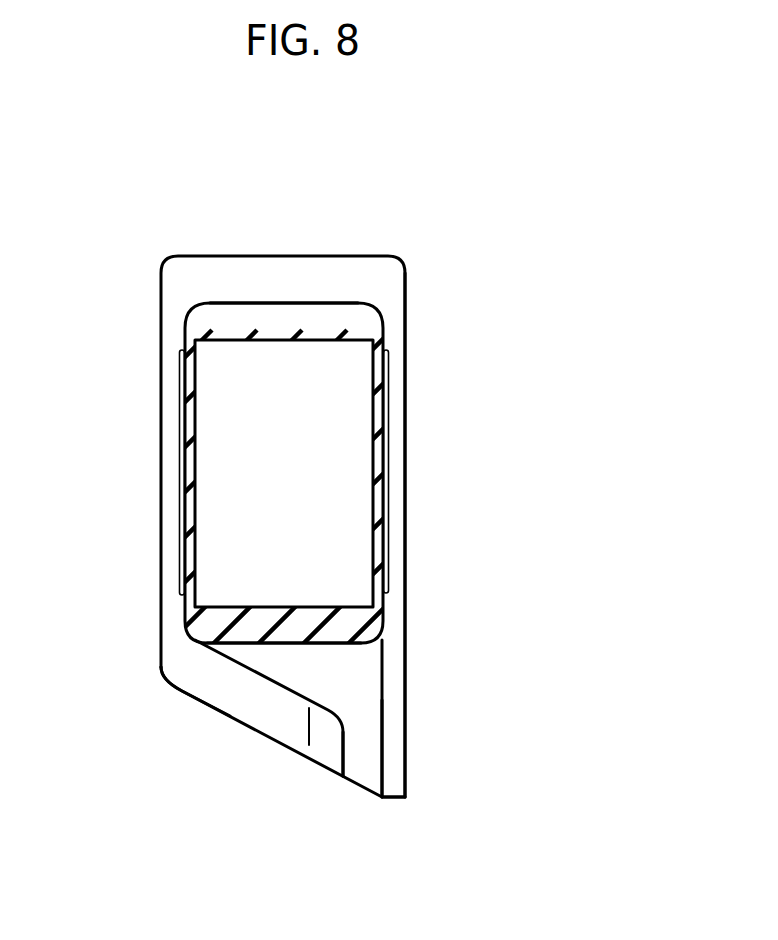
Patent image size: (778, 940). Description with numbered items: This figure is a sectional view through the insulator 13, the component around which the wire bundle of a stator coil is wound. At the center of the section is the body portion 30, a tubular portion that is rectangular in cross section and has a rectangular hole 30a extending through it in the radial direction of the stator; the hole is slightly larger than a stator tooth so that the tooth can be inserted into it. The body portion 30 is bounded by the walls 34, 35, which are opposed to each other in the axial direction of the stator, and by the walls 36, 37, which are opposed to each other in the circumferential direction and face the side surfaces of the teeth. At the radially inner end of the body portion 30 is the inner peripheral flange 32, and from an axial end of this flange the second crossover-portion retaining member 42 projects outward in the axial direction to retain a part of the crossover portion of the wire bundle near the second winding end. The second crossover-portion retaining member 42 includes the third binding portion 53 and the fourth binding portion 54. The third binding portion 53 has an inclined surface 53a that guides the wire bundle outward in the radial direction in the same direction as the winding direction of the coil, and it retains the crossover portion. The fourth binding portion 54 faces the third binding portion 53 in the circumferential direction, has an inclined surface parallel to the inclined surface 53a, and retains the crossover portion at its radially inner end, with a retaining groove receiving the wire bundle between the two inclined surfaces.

The insulator 13 is at (408, 218).
The body portion 30 is at (388, 312).
The rectangular hole 30a is at (322, 400).
The inner peripheral flange 32 is at (232, 695).
The wall 34 is at (285, 640).
The wall 35 is at (287, 303).
The wall 36 is at (377, 462).
The wall 37 is at (187, 450).
The second crossover-portion retaining member 42 is at (418, 763).
The third binding portion 53 is at (290, 722).
The inclined surface 53a is at (323, 740).
The fourth binding portion 54 is at (395, 787).